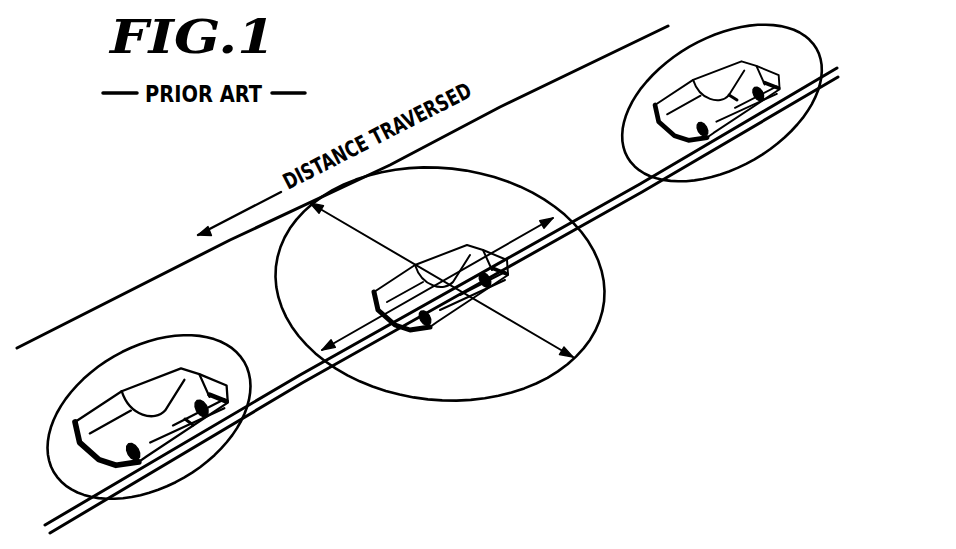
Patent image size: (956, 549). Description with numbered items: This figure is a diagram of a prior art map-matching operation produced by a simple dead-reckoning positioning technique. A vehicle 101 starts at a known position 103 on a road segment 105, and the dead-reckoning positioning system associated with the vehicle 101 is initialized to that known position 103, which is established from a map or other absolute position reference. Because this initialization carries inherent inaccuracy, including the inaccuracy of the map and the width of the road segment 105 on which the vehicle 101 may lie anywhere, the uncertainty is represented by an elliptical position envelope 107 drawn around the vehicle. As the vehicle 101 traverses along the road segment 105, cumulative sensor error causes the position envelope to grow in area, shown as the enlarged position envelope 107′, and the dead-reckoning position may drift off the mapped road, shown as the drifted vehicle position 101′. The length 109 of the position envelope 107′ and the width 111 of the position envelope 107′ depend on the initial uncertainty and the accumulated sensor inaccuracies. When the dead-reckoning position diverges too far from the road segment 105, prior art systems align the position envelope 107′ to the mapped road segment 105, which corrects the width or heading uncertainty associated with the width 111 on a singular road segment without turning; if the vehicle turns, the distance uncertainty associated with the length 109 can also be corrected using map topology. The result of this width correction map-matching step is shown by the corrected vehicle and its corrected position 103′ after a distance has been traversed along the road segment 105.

The vehicle 101 is at (760, 78).
The known position 103 is at (733, 98).
The road segment 105 is at (543, 86).
The position envelope 107 is at (640, 92).
The drifted vehicle position 101′ is at (508, 267).
The increased position envelope 107′ is at (540, 387).
The length of the position envelope 109 is at (343, 337).
The width of the position envelope 111 is at (500, 313).
The corrected position 103′ is at (190, 423).